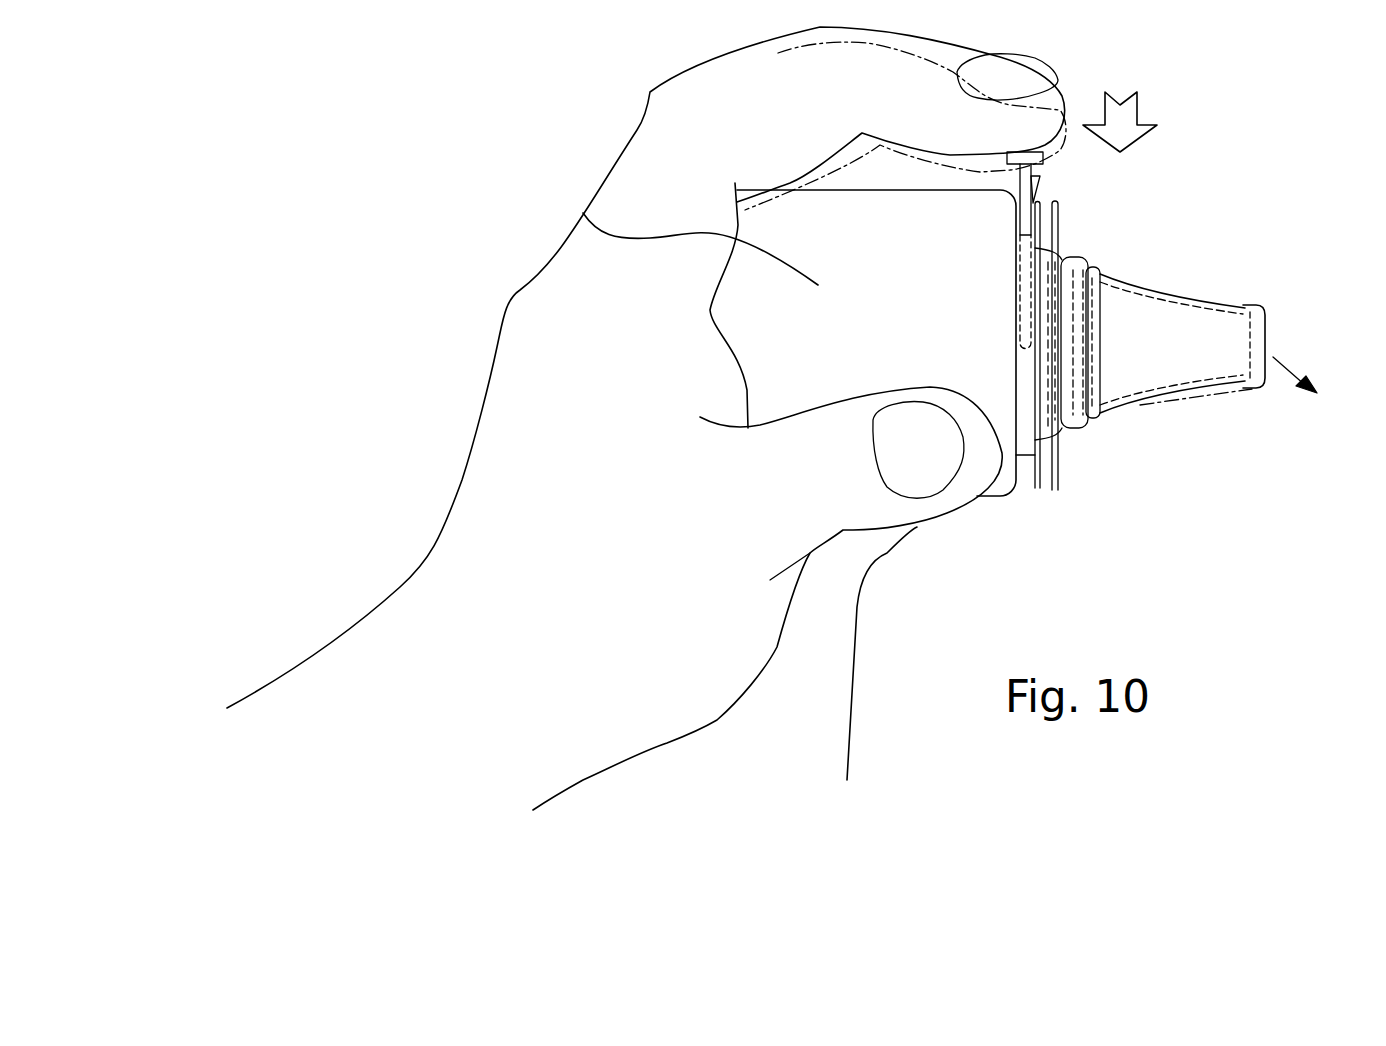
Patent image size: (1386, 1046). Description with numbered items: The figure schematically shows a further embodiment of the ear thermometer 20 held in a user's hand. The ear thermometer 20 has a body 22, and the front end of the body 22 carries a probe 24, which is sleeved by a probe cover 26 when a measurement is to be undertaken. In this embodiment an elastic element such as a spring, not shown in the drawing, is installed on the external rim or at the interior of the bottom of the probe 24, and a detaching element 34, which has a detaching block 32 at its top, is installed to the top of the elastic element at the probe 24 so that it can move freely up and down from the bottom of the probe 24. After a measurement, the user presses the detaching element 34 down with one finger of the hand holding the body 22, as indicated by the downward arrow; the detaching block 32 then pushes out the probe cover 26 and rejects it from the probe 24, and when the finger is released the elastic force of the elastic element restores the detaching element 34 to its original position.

The ear thermometer 20 is at (1022, 524).
The body 22 is at (583, 213).
The probe 24 is at (1205, 342).
The probe cover 26 is at (1260, 387).
The detaching block 32 is at (1040, 184).
The detaching element 34 is at (1050, 170).